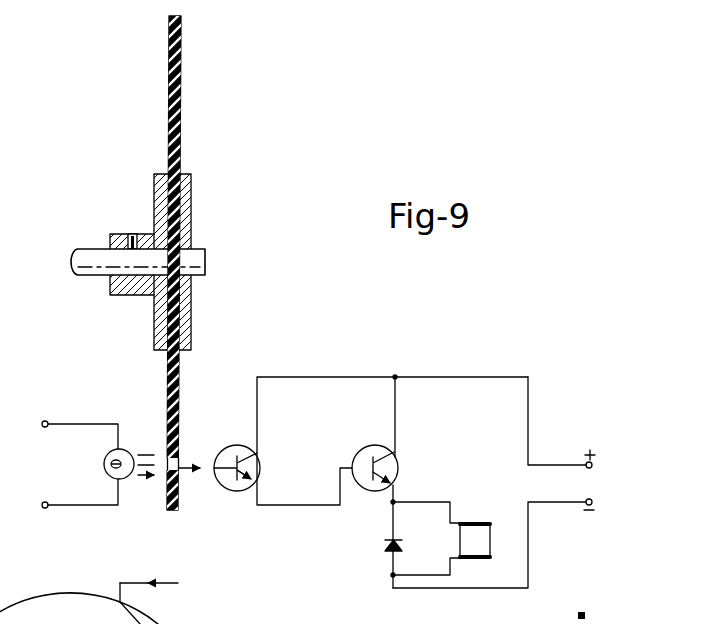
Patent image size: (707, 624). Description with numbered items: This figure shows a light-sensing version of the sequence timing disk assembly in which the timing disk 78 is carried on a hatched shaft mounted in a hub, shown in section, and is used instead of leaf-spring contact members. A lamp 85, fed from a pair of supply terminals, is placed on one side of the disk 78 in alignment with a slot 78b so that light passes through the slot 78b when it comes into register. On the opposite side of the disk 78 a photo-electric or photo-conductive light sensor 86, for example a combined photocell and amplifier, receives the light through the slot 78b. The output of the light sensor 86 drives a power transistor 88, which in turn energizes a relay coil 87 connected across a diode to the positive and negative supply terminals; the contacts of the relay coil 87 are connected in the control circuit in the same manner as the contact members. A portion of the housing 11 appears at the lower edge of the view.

The timing disk 78 is at (178, 377).
The slot 78b is at (183, 466).
The lamp 85 is at (131, 449).
The light sensor 86 is at (231, 492).
The power transistor 88 is at (367, 448).
The relay coil 87 is at (491, 534).
The housing 11 is at (106, 600).